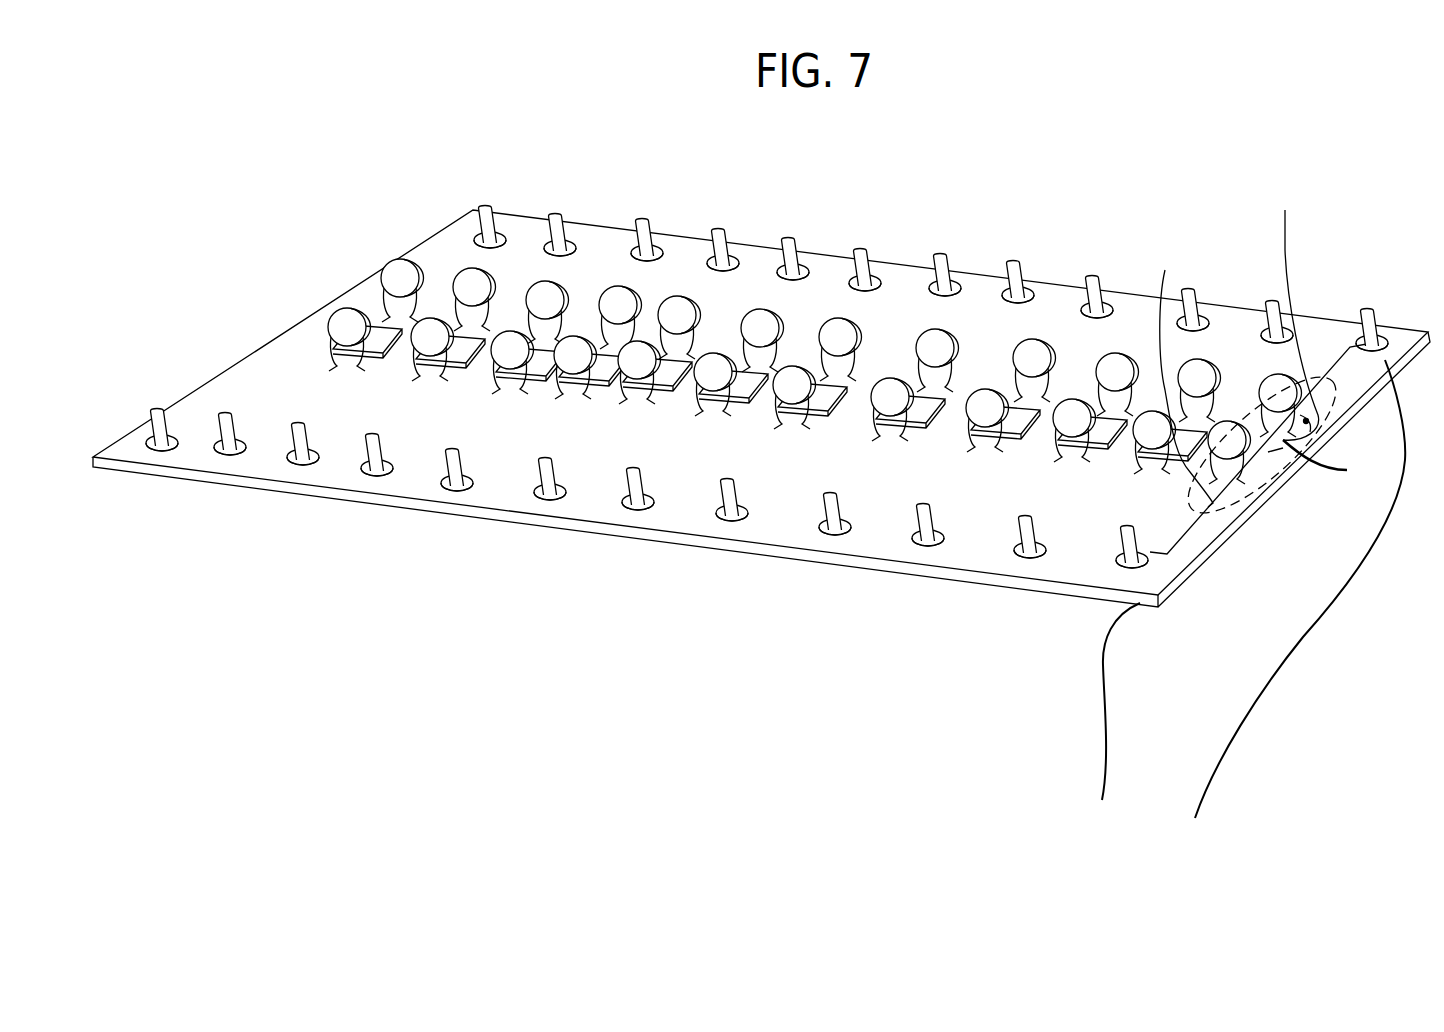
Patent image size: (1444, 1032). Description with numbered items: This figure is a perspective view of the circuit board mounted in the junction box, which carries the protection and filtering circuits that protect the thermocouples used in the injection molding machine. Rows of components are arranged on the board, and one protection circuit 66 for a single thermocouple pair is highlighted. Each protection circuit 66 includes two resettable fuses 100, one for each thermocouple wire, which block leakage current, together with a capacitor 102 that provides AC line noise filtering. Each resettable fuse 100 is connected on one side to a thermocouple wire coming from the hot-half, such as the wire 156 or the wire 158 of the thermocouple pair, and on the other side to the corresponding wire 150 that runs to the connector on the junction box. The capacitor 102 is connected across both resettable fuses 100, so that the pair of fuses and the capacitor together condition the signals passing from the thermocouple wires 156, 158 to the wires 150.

The protection circuit 66 is at (1306, 420).
The resettable fuse 100 is at (1305, 393).
The capacitor 102 is at (1273, 455).
The wire 150 is at (1285, 242).
The thermocouple wire 156 is at (1210, 780).
The thermocouple wire 158 is at (1108, 780).